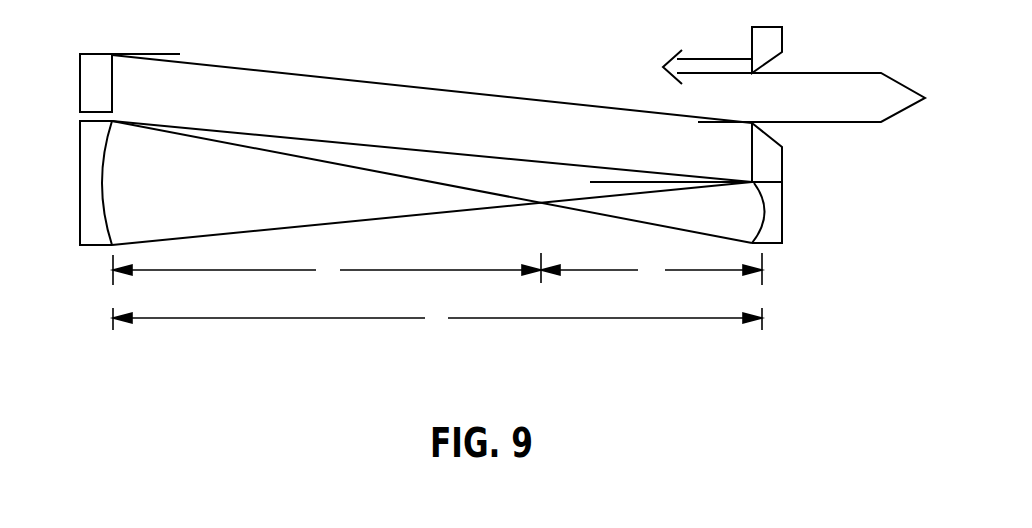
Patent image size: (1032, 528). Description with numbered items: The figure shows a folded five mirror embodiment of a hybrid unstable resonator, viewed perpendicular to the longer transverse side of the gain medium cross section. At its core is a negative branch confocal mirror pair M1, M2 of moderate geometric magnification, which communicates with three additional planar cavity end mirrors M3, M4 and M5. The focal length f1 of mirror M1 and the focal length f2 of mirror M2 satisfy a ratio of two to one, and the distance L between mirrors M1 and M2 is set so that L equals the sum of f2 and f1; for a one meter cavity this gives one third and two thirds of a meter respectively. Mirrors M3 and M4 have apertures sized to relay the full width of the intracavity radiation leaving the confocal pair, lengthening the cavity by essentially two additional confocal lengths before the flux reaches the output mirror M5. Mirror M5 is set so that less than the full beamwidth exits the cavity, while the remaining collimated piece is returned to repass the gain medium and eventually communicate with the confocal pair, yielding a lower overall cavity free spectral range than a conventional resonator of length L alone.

The confocal mirror M1 is at (787, 212).
The confocal mirror M2 is at (76, 183).
The cavity extending optics mirror M3 is at (787, 152).
The cavity extending optics mirror M4 is at (110, 83).
The output mirror M5 is at (787, 50).
The focal length of mirror M1 f1 is at (651, 270).
The focal length of mirror M2 f2 is at (327, 270).
The distance between cavity optics mirrors M1 and M2 L is at (437, 293).